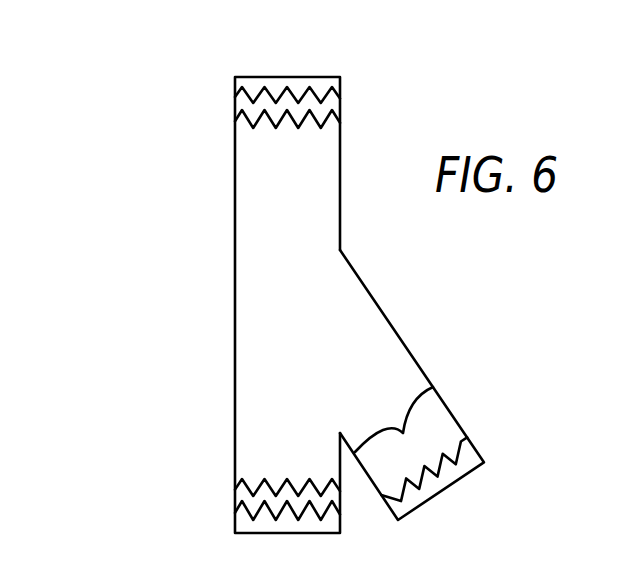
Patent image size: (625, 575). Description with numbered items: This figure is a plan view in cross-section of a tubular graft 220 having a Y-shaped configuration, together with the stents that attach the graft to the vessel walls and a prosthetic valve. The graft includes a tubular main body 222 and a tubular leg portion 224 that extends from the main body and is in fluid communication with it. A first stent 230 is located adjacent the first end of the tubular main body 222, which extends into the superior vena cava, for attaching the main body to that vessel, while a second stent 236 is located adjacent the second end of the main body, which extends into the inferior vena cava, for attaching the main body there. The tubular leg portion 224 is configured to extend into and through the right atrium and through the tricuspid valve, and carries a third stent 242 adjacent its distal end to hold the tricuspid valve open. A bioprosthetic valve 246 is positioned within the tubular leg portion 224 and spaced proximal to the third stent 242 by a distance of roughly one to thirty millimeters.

The tubular graft 220 is at (122, 191).
The tubular main body 222 is at (235, 303).
The tubular leg portion 224 is at (406, 347).
The first stent 230 is at (240, 97).
The second stent 236 is at (236, 507).
The third stent 242 is at (469, 440).
The bioprosthetic valve 246 is at (435, 388).